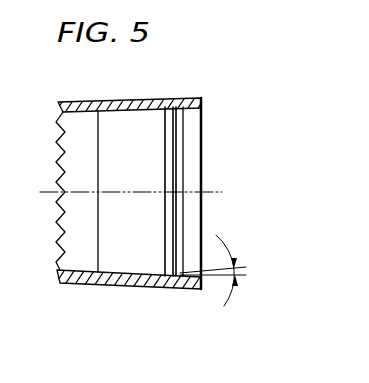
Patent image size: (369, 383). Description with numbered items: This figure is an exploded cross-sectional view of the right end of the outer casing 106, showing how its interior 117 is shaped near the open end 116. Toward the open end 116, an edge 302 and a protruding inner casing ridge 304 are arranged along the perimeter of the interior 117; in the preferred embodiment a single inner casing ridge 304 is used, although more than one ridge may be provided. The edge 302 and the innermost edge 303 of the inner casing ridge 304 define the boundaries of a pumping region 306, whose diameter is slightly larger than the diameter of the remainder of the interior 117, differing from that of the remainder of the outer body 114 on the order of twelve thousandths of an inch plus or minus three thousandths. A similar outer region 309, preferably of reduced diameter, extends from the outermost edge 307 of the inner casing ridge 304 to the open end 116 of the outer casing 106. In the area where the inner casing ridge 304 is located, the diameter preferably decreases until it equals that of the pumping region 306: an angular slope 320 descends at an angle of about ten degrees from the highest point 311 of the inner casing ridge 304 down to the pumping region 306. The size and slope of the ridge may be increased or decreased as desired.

The outer casing 106 is at (239, 109).
The outer body 114 is at (152, 99).
The open end 116 is at (202, 171).
The interior 117 is at (80, 110).
The edge 302 is at (99, 143).
The innermost edge 303 is at (163, 180).
The inner casing ridge 304 is at (185, 95).
The pumping region 306 is at (163, 298).
The outermost edge 307 is at (184, 220).
The outer region 309 is at (185, 298).
The highest point 311 is at (188, 99).
The angular slope 320 is at (229, 252).